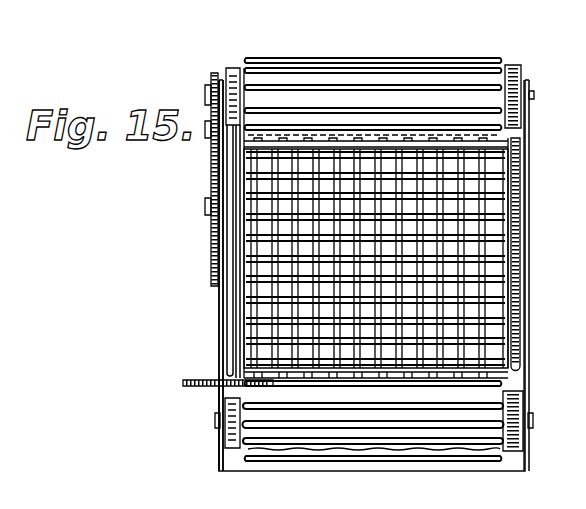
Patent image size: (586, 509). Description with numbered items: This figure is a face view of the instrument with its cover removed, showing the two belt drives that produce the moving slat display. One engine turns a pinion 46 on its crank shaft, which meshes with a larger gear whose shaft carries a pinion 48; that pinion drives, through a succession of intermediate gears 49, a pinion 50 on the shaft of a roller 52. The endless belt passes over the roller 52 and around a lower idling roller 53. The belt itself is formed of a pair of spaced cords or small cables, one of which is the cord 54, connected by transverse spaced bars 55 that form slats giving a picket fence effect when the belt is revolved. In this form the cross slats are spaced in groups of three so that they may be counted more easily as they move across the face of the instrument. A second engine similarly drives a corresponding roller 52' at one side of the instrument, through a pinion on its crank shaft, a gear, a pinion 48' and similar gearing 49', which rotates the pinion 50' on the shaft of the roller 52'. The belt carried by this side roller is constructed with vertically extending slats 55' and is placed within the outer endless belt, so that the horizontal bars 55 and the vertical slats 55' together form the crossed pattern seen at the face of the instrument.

The pinion 46 is at (366, 284).
The pinion 48 is at (197, 179).
The pinion 48' is at (204, 388).
The intermediate gears 49 is at (200, 275).
The gearing 49' is at (197, 429).
The pinion 50 is at (210, 81).
The pinion 50' is at (278, 415).
The roller 52 is at (537, 79).
The roller 52' is at (544, 254).
The lower idling roller 53 is at (512, 432).
The cord 54 is at (520, 283).
The transverse bars 55 is at (373, 77).
The vertically extending slats 55' is at (286, 223).